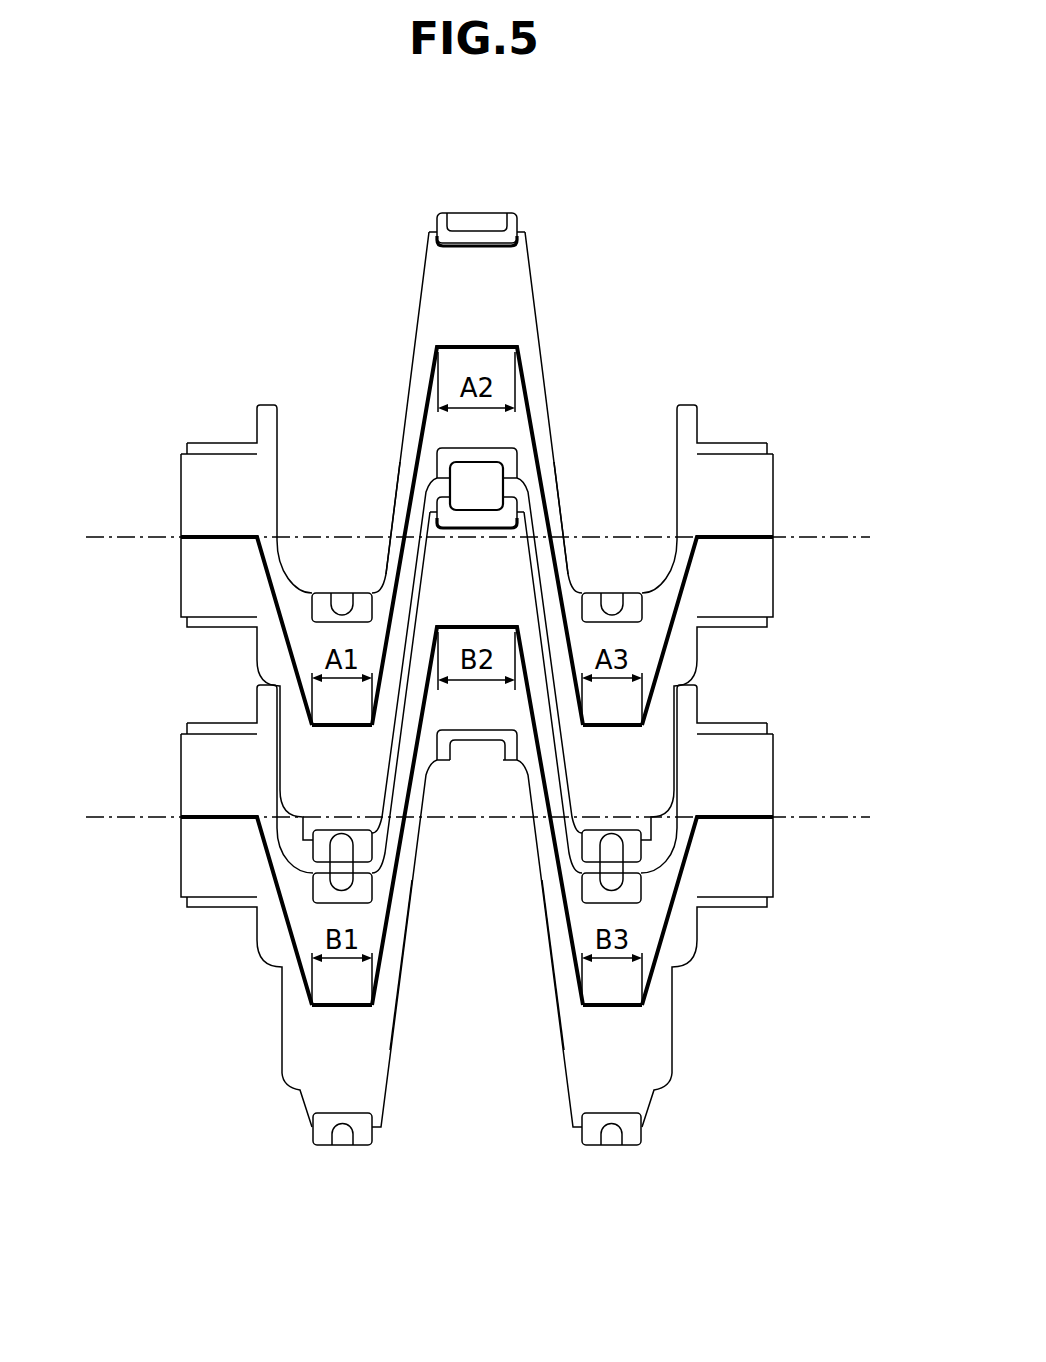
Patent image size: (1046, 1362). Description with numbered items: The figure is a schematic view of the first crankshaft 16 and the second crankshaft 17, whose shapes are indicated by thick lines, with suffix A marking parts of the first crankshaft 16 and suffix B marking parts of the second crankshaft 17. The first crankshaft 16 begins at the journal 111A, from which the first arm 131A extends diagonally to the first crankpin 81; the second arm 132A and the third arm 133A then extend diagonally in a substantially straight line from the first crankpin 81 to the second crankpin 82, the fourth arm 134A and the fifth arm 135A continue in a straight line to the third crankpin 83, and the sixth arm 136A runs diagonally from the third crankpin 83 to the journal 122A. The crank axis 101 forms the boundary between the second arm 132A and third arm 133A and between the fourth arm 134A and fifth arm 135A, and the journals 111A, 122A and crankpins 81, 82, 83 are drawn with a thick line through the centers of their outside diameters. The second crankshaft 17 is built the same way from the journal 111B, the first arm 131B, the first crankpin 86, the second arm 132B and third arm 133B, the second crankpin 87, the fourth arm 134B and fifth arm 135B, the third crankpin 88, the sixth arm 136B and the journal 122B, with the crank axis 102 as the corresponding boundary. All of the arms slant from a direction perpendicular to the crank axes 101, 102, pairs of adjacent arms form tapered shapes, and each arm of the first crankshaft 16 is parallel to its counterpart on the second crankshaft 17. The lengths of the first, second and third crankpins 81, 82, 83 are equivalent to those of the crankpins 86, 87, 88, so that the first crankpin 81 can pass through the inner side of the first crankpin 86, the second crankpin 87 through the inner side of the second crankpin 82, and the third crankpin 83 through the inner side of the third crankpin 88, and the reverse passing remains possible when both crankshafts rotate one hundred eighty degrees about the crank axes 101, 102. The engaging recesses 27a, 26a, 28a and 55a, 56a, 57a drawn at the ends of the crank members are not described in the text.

The first crankshaft 16 is at (472, 392).
The second crankshaft 17 is at (390, 1012).
The engaging recess of first link plate 27a is at (477, 230).
The engaging recess of second link plate 26a is at (343, 1130).
The engaging recess of second link plate 28a is at (612, 1130).
The engaging recess 55a is at (478, 742).
The engaging recess 56a is at (612, 612).
The engaging recess 57a is at (342, 612).
The first crankpin 81 is at (343, 727).
The second crankpin 82 is at (477, 345).
The third crankpin 83 is at (612, 727).
The first crankpin 86 is at (343, 1010).
The second crankpin 87 is at (473, 627).
The third crankpin 88 is at (612, 1010).
The crank axis 101 is at (101, 538).
The crank axis 102 is at (101, 818).
The journal 111A is at (215, 534).
The journal 111B is at (215, 820).
The journal 122A is at (755, 534).
The journal 122B is at (746, 820).
The first arm 131A is at (283, 630).
The second arm 132A is at (388, 575).
The third arm 133A is at (405, 415).
The fourth arm 134A is at (546, 398).
The fifth arm 135A is at (563, 565).
The sixth arm 136A is at (668, 636).
The first arm 131B is at (290, 937).
The second arm 132B is at (398, 935).
The third arm 133B is at (425, 775).
The fourth arm 134B is at (525, 775).
The fifth arm 135B is at (553, 968).
The sixth arm 136B is at (668, 932).